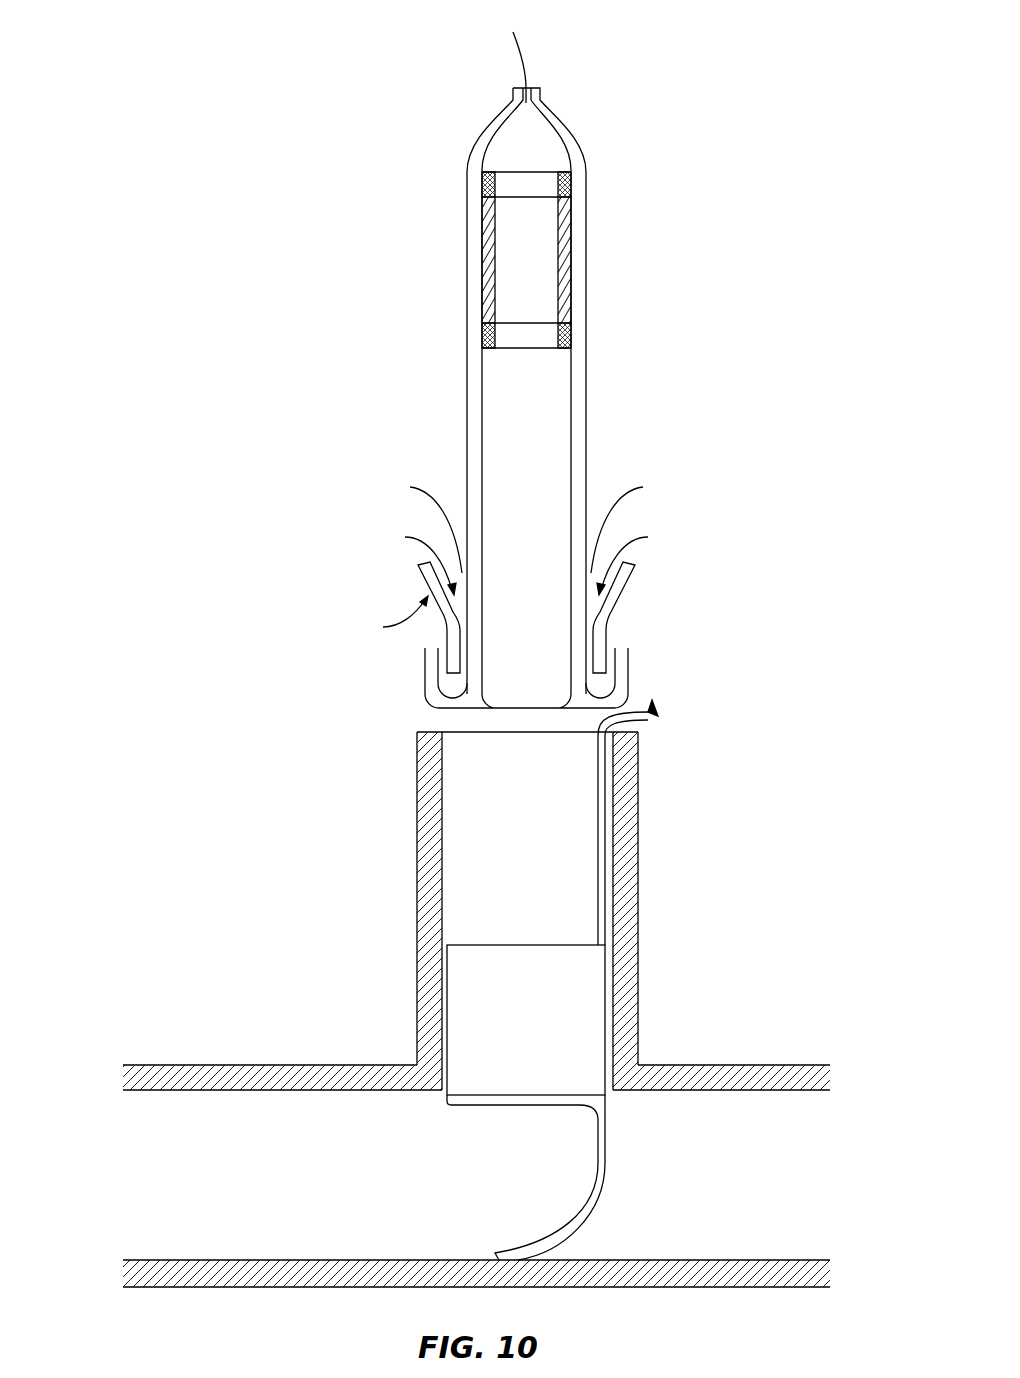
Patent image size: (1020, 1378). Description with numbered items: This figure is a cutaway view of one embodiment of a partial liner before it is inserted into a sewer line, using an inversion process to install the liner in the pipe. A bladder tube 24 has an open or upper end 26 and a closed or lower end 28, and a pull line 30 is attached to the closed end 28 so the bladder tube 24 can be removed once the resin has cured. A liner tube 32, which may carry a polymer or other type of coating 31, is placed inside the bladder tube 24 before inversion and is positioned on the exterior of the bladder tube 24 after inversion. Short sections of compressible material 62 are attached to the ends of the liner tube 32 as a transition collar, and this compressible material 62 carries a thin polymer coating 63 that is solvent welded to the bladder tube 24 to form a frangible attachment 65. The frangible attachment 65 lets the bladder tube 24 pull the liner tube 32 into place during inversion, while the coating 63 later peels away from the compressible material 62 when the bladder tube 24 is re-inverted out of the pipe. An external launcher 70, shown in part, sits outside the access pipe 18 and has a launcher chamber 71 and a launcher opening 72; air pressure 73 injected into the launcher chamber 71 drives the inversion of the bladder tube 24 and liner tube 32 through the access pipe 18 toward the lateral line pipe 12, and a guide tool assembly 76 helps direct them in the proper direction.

The lateral line pipe 12 is at (308, 1068).
The access pipe 18 is at (422, 897).
The bladder tube 24 is at (466, 445).
The open end of the bladder tube 26 is at (462, 711).
The closed end of the bladder tube 28 is at (547, 112).
The pull line 30 is at (512, 55).
The coating 31 is at (481, 233).
The liner tube 32 is at (564, 265).
The compressible material 62 is at (570, 171).
The coating 63 is at (481, 190).
The frangible attachment 65 is at (482, 337).
The external launcher 70 is at (387, 617).
The launcher chamber 71 is at (528, 524).
The launcher opening 72 is at (588, 647).
The air pressure 73 is at (523, 561).
The guide tool assembly 76 is at (510, 1125).